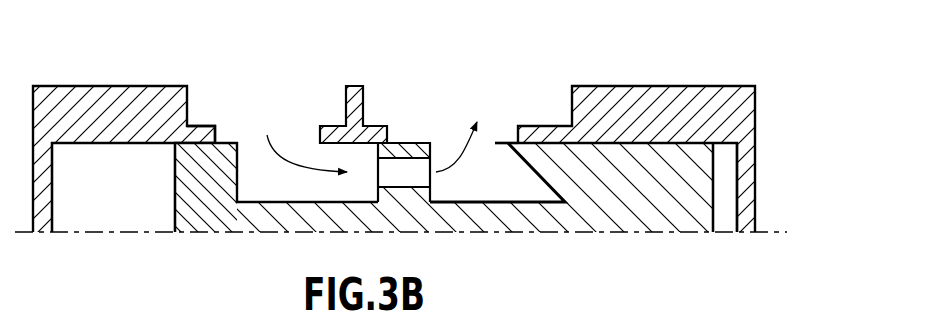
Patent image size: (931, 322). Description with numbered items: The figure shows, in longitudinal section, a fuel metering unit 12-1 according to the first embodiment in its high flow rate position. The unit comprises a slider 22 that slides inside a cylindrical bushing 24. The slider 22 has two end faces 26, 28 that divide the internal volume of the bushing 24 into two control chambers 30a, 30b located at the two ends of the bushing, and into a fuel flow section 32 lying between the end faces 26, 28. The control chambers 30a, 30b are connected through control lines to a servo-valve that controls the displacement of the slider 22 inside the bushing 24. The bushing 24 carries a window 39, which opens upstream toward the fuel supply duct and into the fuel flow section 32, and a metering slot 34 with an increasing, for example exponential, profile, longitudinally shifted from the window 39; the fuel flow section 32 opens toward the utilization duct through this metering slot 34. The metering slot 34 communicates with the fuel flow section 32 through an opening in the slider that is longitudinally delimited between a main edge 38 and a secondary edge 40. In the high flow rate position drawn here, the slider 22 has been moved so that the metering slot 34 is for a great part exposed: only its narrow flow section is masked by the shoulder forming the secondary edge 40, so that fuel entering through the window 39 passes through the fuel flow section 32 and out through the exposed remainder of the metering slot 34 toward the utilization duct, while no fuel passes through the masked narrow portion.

The fuel metering unit 12-1 is at (425, 124).
The bushing 24 is at (668, 85).
The window 39 is at (215, 132).
The end face 26 is at (188, 177).
The fuel flow section 32 is at (277, 184).
The secondary edge 40 is at (408, 172).
The main edge 38 is at (495, 144).
The metering slot 34 is at (490, 132).
The slider 22 is at (419, 179).
The end face 28 is at (685, 173).
The control chamber 30a is at (110, 213).
The control chamber 30b is at (727, 215).